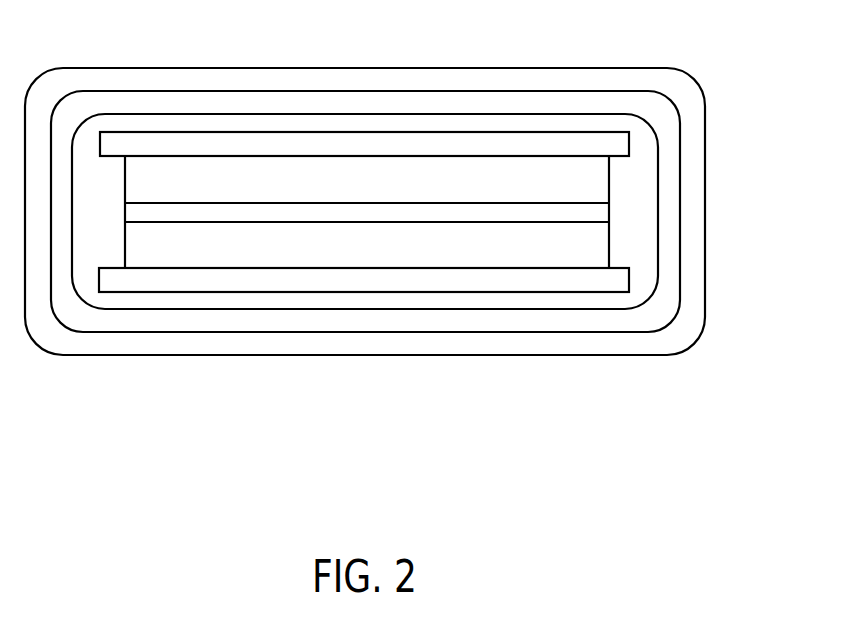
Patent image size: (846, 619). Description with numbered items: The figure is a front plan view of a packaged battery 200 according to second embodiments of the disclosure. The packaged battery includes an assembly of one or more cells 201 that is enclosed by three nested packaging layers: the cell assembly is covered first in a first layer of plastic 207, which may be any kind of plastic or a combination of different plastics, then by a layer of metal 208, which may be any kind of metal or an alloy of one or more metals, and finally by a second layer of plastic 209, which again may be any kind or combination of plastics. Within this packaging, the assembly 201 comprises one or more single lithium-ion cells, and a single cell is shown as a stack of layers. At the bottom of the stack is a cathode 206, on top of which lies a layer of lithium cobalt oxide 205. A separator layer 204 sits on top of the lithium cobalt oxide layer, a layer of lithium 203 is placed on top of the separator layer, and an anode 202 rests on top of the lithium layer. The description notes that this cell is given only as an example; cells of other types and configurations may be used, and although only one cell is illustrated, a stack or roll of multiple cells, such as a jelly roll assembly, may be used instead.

The packaged battery 200 is at (411, 233).
The assembly of one or more cells 201 is at (344, 220).
The anode 202 is at (157, 147).
The layer of lithium 203 is at (188, 188).
The separator layer 204 is at (274, 213).
The layer of lithium cobalt oxide 205 is at (359, 253).
The cathode 206 is at (434, 283).
The first layer of plastic 207 is at (643, 183).
The layer of metal 208 is at (663, 216).
The second layer of plastic 209 is at (689, 241).